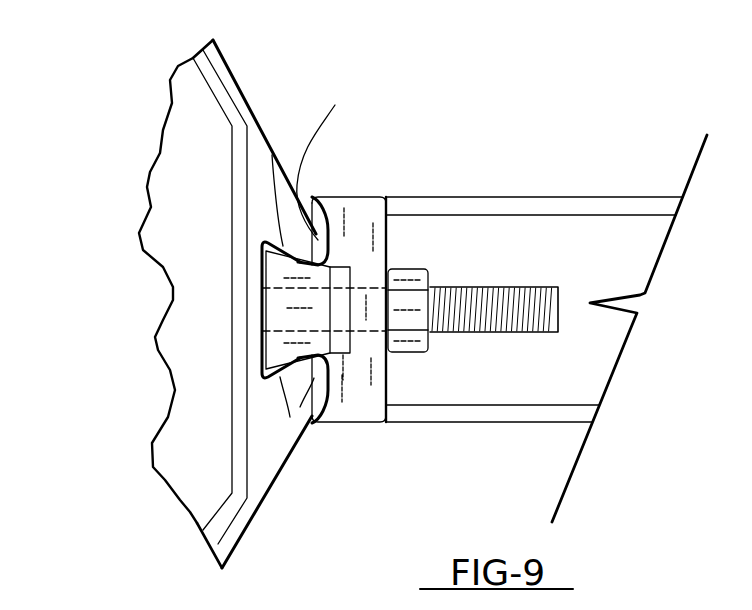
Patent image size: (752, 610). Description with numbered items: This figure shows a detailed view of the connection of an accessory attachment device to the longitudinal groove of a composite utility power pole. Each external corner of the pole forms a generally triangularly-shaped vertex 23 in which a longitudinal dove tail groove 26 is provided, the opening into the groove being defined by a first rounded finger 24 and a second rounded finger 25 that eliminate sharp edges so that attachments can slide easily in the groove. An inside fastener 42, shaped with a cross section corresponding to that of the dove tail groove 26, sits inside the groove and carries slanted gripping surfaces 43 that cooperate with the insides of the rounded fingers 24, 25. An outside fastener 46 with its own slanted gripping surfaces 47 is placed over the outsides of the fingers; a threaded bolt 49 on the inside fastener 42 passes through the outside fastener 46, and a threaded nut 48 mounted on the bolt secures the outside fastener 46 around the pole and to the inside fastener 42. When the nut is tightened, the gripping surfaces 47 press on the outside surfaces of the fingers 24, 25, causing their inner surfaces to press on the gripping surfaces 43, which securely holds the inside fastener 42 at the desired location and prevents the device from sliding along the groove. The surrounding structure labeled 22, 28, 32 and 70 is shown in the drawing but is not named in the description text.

The panel 22 is at (233, 68).
The vertex 23 is at (257, 272).
The first rounded finger 24 is at (305, 423).
The second rounded finger 25 is at (330, 174).
The dove tail groove 26 is at (263, 333).
The panel inner surface 28 is at (247, 187).
The panel core 32 is at (240, 295).
The inside fastener 42 is at (280, 377).
The slanted gripping surfaces 43 is at (272, 155).
The outside fastener 46 is at (365, 210).
The slanted gripping surfaces 47 is at (333, 212).
The threaded nut 48 is at (420, 340).
The threaded bolt 49 is at (553, 290).
The frame member 70 is at (573, 207).